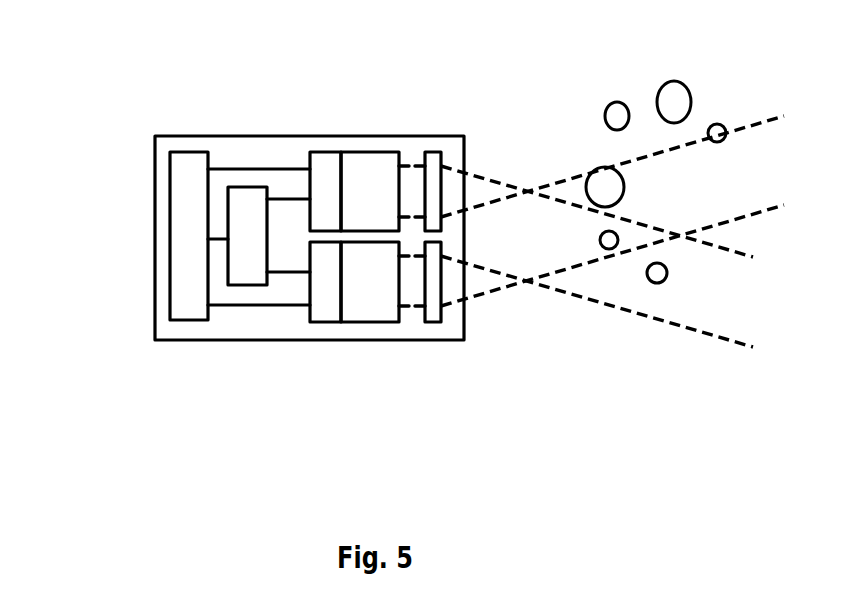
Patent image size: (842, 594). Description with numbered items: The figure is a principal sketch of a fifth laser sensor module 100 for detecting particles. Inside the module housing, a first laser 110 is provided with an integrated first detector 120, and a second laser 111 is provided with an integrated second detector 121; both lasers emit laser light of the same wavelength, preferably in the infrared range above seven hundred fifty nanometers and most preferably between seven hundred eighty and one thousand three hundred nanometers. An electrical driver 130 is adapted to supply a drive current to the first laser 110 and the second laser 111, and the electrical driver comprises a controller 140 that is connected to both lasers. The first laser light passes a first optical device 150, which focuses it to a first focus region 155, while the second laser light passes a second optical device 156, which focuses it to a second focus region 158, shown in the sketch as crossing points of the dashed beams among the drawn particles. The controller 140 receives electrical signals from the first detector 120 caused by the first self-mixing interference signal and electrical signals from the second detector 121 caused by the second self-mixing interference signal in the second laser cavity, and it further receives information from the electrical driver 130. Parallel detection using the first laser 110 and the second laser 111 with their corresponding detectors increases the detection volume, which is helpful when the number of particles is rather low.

The fifth laser sensor module 100 is at (168, 135).
The first laser 110 is at (363, 152).
The second laser 111 is at (373, 322).
The first detector 120 is at (330, 152).
The second detector 121 is at (323, 322).
The electrical driver 130 is at (170, 241).
The controller 140 is at (248, 285).
The first optical device 150 is at (435, 152).
The first focus region 155 is at (527, 190).
The second optical device 156 is at (430, 322).
The second focus region 158 is at (527, 282).